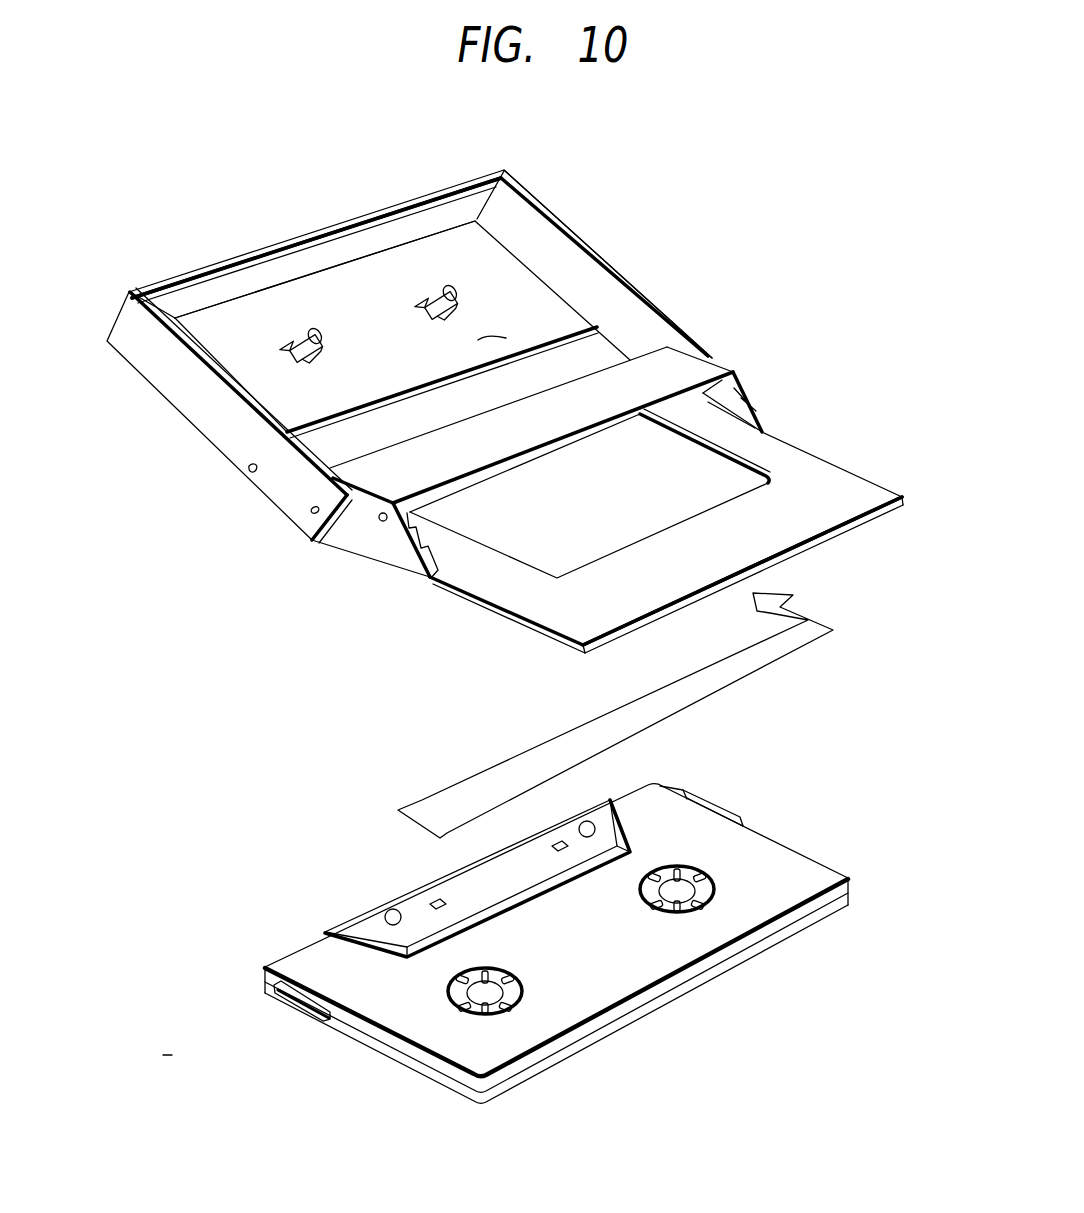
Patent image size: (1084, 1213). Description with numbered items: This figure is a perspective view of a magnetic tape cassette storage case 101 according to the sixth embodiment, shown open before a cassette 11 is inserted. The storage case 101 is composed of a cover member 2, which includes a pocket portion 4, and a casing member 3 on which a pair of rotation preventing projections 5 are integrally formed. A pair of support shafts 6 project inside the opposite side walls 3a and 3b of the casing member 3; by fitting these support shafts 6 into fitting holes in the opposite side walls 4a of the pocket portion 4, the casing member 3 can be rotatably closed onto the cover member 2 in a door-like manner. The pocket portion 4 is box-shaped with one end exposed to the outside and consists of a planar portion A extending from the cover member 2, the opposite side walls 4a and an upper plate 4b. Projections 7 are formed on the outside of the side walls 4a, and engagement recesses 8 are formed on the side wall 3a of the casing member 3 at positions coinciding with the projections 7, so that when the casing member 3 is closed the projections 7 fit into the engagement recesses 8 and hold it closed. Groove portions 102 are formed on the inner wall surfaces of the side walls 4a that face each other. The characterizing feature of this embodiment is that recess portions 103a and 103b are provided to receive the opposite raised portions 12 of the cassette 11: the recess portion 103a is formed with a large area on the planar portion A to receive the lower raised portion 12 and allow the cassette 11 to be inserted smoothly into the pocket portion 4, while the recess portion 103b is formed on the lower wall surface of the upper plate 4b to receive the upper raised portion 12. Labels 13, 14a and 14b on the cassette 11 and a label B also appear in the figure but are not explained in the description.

The cassette storage case 101 is at (782, 208).
The cover member 2 is at (832, 460).
The casing member 3 is at (568, 220).
The side wall of casing member 3a is at (192, 406).
The side wall of casing member 3b is at (283, 242).
The pocket portion 4 is at (672, 386).
The side wall of pocket portion 4a is at (740, 380).
The upper plate of pocket portion 4b is at (456, 456).
The rotation preventing projections 5 is at (432, 298).
The support shafts 6 is at (313, 512).
The projections 7 is at (384, 523).
The engagement recesses 8 is at (250, 470).
The cassette 11 is at (757, 824).
The raised portion 12 is at (418, 888).
The reel hub 13 is at (652, 904).
The slot 14a is at (304, 1014).
The tab 14b is at (706, 802).
The groove portions 102 is at (754, 404).
The recess portion 103a is at (582, 556).
The recess portion 103b is at (504, 462).
The planar portion A is at (800, 524).
The surface B is at (505, 346).